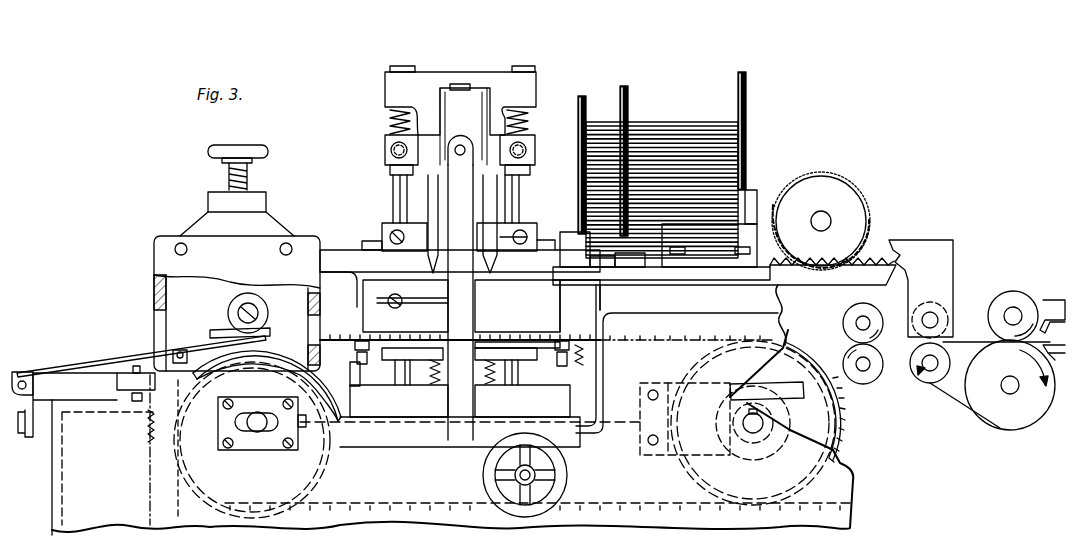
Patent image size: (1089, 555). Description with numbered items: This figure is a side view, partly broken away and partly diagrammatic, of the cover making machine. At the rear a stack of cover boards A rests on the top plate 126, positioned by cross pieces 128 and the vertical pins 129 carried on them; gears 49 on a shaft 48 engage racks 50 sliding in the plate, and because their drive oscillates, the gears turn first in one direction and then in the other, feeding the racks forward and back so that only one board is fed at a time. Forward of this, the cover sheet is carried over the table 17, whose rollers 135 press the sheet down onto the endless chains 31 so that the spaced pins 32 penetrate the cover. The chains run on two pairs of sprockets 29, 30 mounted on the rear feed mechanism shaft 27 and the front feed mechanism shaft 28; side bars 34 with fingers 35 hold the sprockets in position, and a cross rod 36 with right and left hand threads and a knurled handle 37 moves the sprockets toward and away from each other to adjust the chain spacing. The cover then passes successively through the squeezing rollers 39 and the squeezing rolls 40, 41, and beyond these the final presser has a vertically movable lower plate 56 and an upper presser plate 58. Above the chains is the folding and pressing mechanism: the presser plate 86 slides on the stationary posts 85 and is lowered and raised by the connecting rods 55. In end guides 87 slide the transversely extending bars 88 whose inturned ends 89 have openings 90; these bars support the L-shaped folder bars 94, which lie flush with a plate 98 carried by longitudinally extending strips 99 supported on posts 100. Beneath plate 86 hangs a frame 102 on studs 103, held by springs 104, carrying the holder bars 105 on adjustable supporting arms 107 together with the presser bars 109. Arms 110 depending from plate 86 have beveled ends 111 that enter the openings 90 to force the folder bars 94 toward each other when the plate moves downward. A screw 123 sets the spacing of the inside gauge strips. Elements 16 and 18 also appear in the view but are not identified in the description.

The frame partition 16 is at (178, 497).
The table 17 is at (93, 365).
The spring 18 is at (145, 432).
The rear feed mechanism shaft 27 is at (755, 430).
The front feed mechanism shaft 28 is at (258, 432).
The sprockets 29 is at (812, 401).
The sprockets 30 is at (303, 466).
The endless chains 31 is at (580, 350).
The spaced pins 32 is at (336, 334).
The side bars 34 is at (616, 440).
The fingers 35 is at (770, 392).
The cross rod 36 is at (530, 478).
The knurled handle 37 is at (485, 477).
The squeezing rollers 39 is at (848, 349).
The squeezing rolls 40 is at (927, 375).
The squeezing rolls 41 is at (1012, 425).
The shaft 48 is at (822, 212).
The gears 49 is at (860, 210).
The racks 50 is at (838, 266).
The connecting rods 55 is at (455, 178).
The vertically movable lower plate 56 is at (1055, 357).
The upper presser plate 58 is at (1048, 305).
The stationary posts 85 is at (458, 85).
The presser plate 86 is at (438, 92).
The end guides 87 is at (399, 388).
The transversely extending bars 88 is at (399, 367).
The inturned ends 89 is at (378, 393).
The openings 90 is at (430, 400).
The L-shaped folder bars 94 is at (357, 343).
The plate 98 is at (478, 363).
The longitudinally extending strips 99 is at (520, 345).
The posts 100 is at (515, 375).
The frame 102 is at (386, 152).
The studs 103 is at (519, 71).
The springs 104 is at (522, 130).
The holder bars 105 is at (500, 232).
The supporting arms 107 is at (525, 200).
The presser bar 109 is at (375, 250).
The arms 110 is at (436, 195).
The beveled ends 111 is at (432, 264).
The screw 123 is at (210, 153).
The top plate 126 is at (724, 277).
The cross pieces 128 is at (762, 178).
The vertical pins 129 is at (585, 104).
The rollers 135 is at (233, 303).
The stack of cover boards A is at (670, 135).